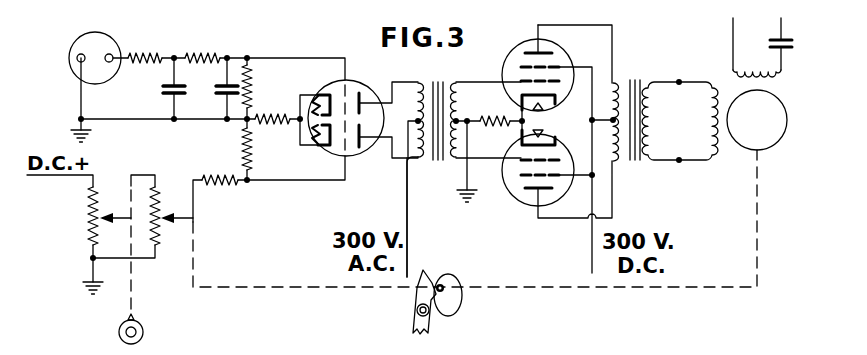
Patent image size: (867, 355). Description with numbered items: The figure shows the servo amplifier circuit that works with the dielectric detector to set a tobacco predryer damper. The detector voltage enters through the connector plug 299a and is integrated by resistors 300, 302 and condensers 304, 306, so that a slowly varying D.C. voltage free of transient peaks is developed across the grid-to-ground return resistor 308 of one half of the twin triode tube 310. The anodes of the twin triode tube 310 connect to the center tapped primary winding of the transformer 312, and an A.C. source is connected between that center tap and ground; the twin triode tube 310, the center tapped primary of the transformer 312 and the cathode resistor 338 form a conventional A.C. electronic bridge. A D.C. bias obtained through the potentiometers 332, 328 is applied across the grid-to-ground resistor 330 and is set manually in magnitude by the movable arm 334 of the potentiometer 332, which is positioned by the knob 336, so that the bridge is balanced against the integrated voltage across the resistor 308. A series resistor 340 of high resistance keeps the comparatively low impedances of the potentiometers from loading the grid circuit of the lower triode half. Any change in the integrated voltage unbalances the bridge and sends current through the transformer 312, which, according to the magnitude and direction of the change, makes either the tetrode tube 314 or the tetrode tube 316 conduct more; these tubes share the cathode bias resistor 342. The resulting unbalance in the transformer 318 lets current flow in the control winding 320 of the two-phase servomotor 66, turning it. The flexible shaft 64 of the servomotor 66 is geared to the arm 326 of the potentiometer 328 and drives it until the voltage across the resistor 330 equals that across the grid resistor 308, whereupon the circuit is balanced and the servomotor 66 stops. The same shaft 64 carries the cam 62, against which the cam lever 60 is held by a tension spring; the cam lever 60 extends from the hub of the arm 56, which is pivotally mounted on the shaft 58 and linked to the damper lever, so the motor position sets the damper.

The connector plug 299a is at (89, 51).
The resistor 300 is at (134, 55).
The resistor 302 is at (198, 57).
The condenser 304 is at (169, 96).
The condenser 306 is at (225, 96).
The grid-to-ground return resistor 308 is at (248, 92).
The grid-to-ground resistor 330 is at (243, 150).
The cathode resistor 338 is at (283, 125).
The series resistor 340 is at (222, 184).
The cathode bias resistor 342 is at (503, 117).
The twin triode tube 310 is at (353, 92).
The center tapped transformer 312 is at (440, 87).
The tetrode tube 314 is at (522, 60).
The tetrode tube 316 is at (516, 183).
The transformer 318 is at (641, 80).
The control winding 320 is at (704, 150).
The servomotor 66 is at (763, 127).
The movable arm 334 is at (118, 214).
The potentiometer 332 is at (90, 238).
The arm 326 is at (177, 219).
The potentiometer 328 is at (160, 232).
The knob 336 is at (143, 328).
The shaft 64 is at (193, 277).
The arm 56 is at (428, 330).
The shaft 58 is at (415, 310).
The cam lever 60 is at (423, 272).
The cam 62 is at (455, 300).